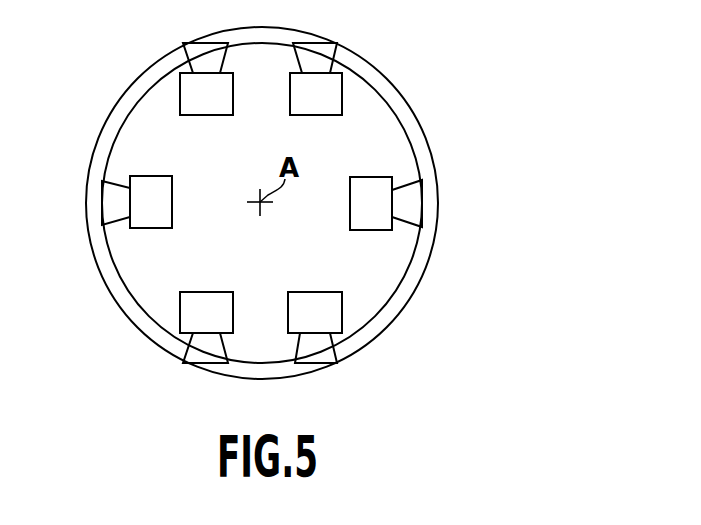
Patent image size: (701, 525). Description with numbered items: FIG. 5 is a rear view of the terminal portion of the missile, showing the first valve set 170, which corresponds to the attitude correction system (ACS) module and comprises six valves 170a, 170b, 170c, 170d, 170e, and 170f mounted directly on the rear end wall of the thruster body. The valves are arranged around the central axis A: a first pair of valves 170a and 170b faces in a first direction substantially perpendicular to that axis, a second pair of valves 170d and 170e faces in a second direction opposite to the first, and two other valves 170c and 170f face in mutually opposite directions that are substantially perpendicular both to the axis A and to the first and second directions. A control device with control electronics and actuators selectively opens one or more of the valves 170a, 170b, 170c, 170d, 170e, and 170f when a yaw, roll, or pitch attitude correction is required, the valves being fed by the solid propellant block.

The first valve set 170 is at (452, 112).
The valve 170a is at (203, 95).
The valve 170b is at (318, 93).
The valve 170c is at (372, 205).
The valve 170d is at (328, 310).
The valve 170e is at (198, 308).
The valve 170f is at (151, 215).